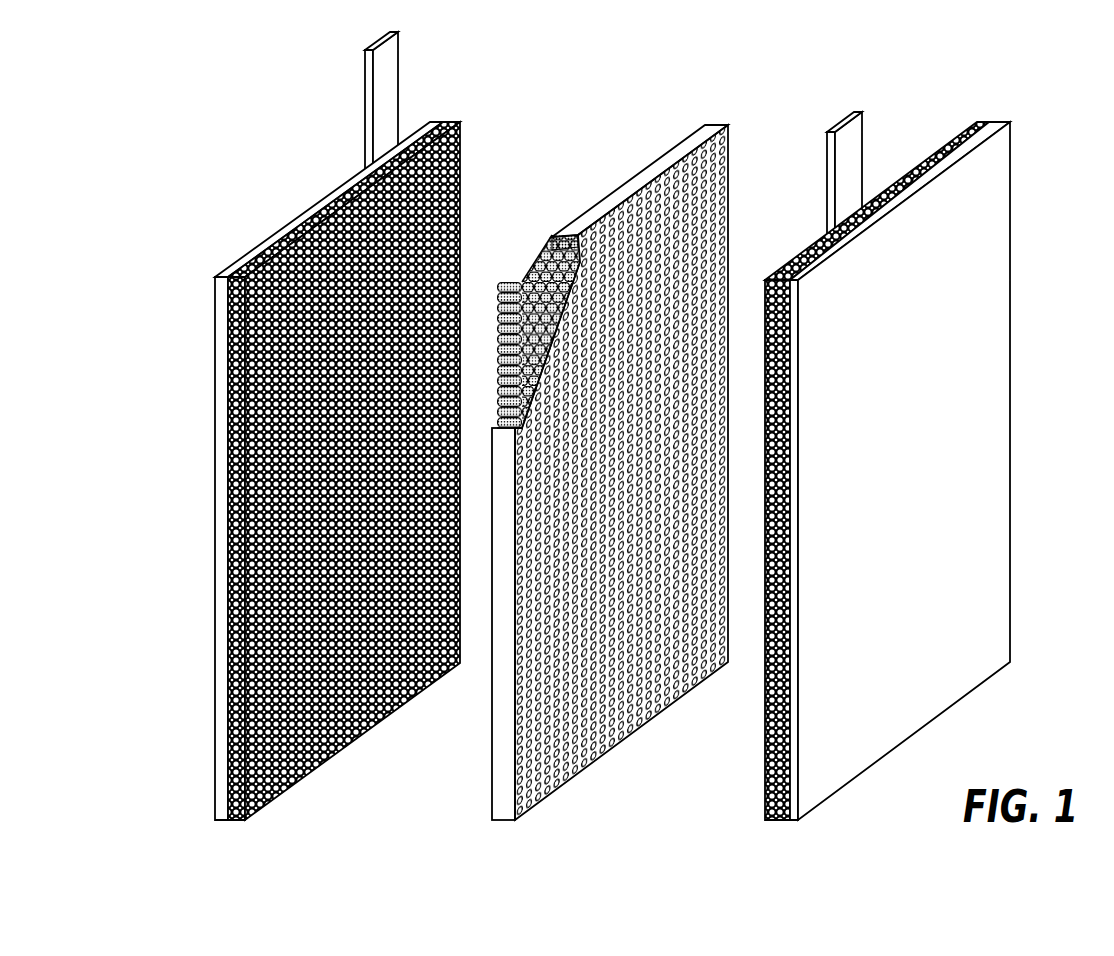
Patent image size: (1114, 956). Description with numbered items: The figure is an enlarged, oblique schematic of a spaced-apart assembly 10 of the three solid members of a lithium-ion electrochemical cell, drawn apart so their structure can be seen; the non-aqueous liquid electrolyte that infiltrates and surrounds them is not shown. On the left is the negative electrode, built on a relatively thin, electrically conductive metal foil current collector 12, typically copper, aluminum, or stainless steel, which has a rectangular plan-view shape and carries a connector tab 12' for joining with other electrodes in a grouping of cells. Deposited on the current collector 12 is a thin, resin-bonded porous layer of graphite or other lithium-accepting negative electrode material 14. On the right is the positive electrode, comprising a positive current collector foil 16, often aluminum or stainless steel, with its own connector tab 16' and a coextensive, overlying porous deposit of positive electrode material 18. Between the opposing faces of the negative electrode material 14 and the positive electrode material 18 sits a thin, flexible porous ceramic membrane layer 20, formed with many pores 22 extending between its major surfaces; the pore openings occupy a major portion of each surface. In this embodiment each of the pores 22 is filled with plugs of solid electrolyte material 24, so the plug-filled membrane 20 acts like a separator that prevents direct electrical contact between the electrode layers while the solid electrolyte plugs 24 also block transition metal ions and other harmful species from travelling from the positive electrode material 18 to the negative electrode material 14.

The spaced-apart assembly 10 is at (225, 122).
The metal foil current collector 12 is at (292, 471).
The connector tab 12' is at (343, 105).
The negative electrode material 14 is at (460, 170).
The positive current collector foil 16 is at (936, 471).
The connector tab 16' is at (879, 185).
The positive electrode material 18 is at (958, 140).
The ceramic membrane layer 20 is at (641, 442).
The pores 22 is at (709, 178).
The solid electrolyte plugs 24 is at (499, 330).